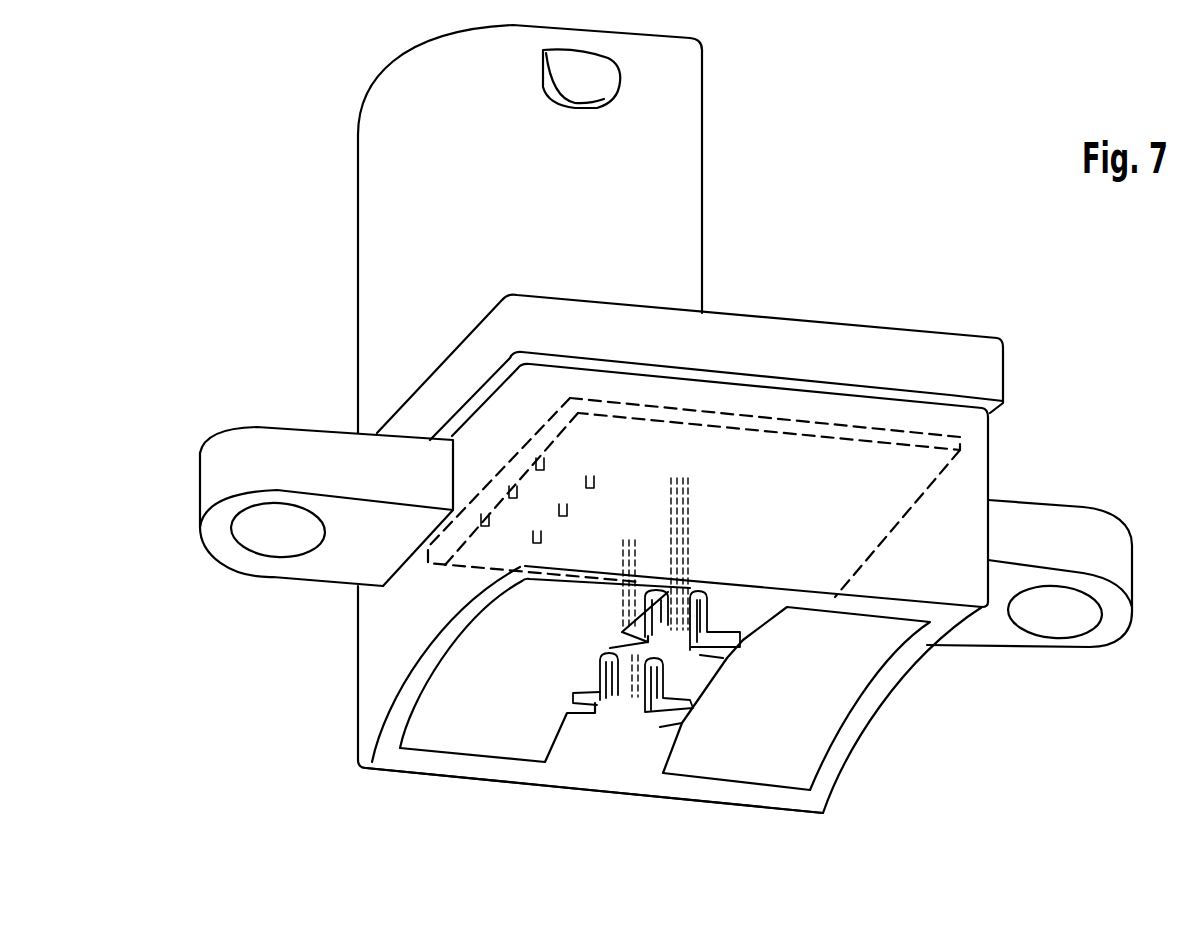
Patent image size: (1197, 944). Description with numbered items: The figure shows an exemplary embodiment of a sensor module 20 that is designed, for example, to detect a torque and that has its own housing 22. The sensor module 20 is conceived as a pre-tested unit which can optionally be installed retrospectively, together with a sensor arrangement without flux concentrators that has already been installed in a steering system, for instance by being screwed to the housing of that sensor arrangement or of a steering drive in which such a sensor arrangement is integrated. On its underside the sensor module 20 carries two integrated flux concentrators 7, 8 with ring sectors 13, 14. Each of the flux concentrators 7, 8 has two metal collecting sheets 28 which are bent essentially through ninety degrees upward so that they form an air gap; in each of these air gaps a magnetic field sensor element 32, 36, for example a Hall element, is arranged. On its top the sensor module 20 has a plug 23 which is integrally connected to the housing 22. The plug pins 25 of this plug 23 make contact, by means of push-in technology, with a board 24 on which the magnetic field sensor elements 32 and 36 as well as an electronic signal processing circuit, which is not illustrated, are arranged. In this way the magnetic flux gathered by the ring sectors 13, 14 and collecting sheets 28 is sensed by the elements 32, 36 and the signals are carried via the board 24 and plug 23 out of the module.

The flux concentrator 7 is at (468, 792).
The flux concentrator 8 is at (706, 820).
The ring sector 13 is at (445, 722).
The ring sector 14 is at (830, 697).
The sensor module 20 is at (283, 346).
The housing 22 is at (957, 495).
The plug 23 is at (668, 135).
The board 24 is at (873, 432).
The plug pins 25 is at (593, 477).
The metal collecting sheets 28 is at (652, 600).
The magnetic field sensor element 32 is at (693, 600).
The magnetic field sensor element 36 is at (626, 705).